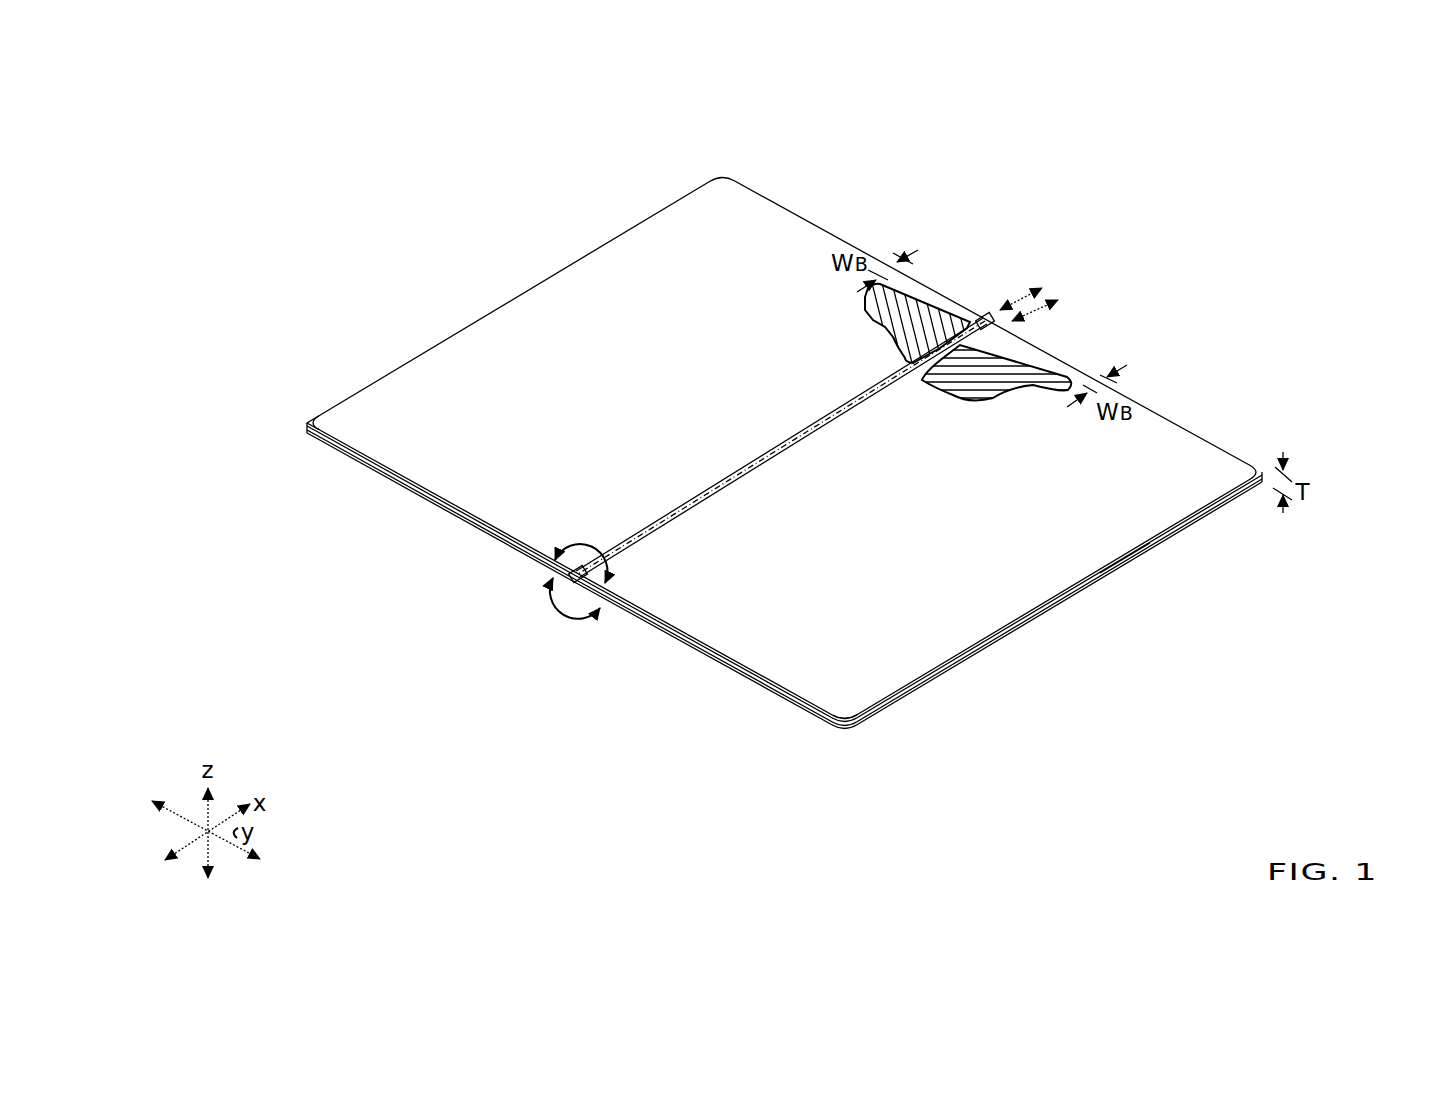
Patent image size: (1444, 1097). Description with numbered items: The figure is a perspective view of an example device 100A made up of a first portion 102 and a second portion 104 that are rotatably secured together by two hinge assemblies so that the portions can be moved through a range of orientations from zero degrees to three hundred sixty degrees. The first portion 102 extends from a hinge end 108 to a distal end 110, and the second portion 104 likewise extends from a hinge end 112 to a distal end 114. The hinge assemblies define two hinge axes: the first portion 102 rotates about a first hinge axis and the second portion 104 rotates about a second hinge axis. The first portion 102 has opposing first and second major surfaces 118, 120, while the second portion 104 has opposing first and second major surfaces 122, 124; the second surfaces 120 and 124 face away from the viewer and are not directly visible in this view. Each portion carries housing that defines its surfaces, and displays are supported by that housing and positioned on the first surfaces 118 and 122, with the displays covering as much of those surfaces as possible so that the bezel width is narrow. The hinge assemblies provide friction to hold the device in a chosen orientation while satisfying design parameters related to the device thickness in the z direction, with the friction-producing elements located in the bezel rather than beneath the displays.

The device 100A is at (620, 78).
The first portion 102 is at (1199, 421).
The second portion 104 is at (498, 298).
The hinge end 108 is at (598, 605).
The distal end 110 is at (832, 730).
The hinge end 112 is at (500, 548).
The distal end 114 is at (306, 432).
The first surface 118 is at (904, 547).
The second surface 120 is at (1150, 555).
The first surface 122 is at (604, 417).
The second surface 124 is at (478, 540).